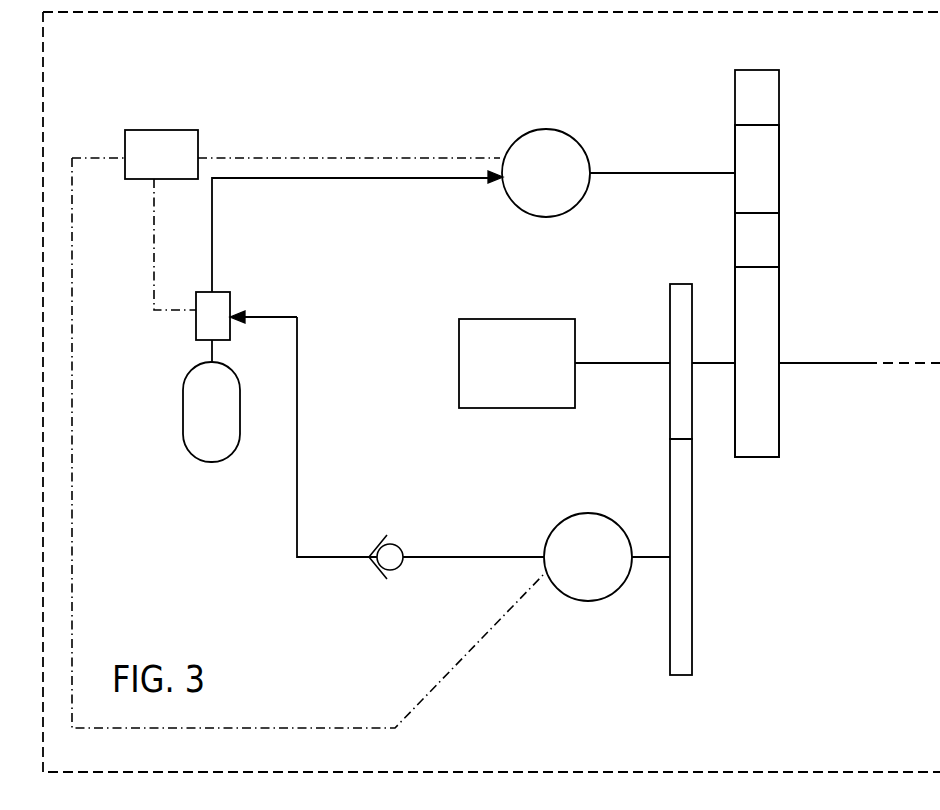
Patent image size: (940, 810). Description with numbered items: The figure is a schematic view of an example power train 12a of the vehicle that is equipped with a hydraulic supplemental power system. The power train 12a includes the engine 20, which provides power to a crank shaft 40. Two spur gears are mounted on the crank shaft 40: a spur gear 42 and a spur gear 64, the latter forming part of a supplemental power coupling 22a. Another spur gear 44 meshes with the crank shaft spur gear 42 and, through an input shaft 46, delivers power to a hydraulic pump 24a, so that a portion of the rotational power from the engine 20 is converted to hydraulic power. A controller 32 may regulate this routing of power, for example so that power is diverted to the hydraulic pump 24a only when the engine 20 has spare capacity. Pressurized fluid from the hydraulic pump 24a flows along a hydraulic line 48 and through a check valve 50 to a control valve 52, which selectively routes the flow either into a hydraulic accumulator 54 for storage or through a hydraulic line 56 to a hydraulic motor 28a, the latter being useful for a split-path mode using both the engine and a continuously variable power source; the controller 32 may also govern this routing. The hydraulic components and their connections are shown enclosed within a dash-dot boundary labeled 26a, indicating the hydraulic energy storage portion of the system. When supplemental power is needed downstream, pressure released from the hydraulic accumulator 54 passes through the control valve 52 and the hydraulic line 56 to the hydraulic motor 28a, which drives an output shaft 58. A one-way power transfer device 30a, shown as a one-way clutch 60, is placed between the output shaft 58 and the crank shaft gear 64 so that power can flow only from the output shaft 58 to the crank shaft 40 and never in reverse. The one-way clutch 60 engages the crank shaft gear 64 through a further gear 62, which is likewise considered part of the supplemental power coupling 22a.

The power train 12a is at (939, 728).
The engine 20 is at (520, 408).
The supplemental power coupling 22a is at (808, 470).
The hydraulic pump 24a is at (587, 602).
The hydraulic accumulator circuit 26a is at (135, 390).
The hydraulic motor 28a is at (545, 129).
The one-way power transfer device 30a is at (698, 122).
The controller 32 is at (198, 147).
The crank shaft 40 is at (650, 363).
The spur gear 42 is at (668, 337).
The spur gear 44 is at (692, 600).
The input shaft 46 is at (647, 560).
The hydraulic line 48 is at (503, 560).
The check valve 50 is at (380, 570).
The control valve 52 is at (238, 300).
The hydraulic accumulator 54 is at (183, 442).
The hydraulic line 56 is at (387, 177).
The output shaft 58 is at (677, 173).
The one-way clutch 60 is at (779, 193).
The gear 62 is at (779, 252).
The spur gear 64 is at (765, 457).